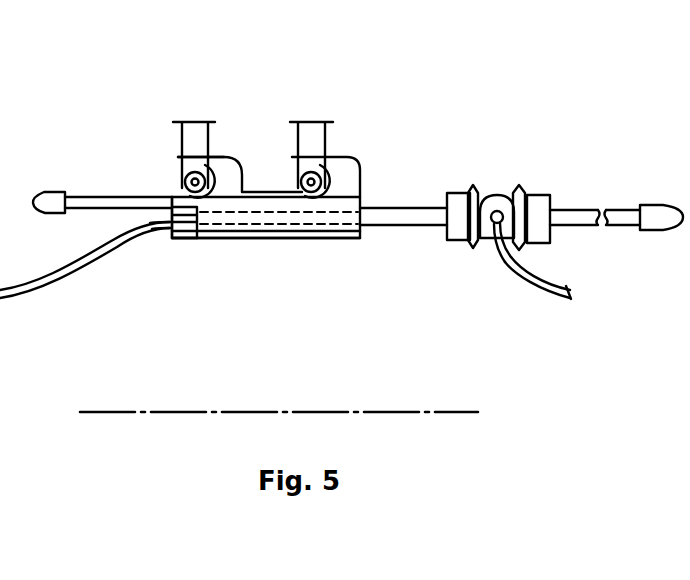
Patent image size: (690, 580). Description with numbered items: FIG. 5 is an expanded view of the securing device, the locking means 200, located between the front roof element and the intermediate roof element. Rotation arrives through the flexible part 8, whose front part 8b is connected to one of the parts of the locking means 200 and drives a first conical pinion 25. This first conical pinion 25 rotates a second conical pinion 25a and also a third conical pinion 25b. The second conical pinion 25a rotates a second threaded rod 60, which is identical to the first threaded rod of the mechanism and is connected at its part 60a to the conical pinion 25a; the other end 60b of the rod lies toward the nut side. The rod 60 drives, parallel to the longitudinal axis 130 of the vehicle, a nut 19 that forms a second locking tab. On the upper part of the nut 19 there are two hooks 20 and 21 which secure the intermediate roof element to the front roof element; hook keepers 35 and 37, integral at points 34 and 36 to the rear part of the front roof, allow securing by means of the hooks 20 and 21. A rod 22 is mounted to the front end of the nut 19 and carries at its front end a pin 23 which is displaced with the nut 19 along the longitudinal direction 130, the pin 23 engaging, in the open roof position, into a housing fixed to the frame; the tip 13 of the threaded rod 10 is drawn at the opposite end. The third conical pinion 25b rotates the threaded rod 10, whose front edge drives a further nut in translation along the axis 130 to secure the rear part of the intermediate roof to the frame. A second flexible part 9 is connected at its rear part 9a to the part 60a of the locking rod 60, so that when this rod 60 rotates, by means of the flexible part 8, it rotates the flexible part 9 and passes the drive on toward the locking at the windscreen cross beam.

The locking means 200 is at (238, 312).
The flexible part 8 is at (538, 296).
The front part of the flexible part 8b is at (470, 242).
The second flexible part 9 is at (42, 294).
The rear part of the second flexible part 9a is at (165, 226).
The threaded rod 10 is at (572, 209).
The rod tip 13 is at (652, 210).
The nut 19 is at (165, 240).
The hook 20 is at (183, 163).
The hook 21 is at (340, 157).
The rod 22 is at (80, 197).
The pin 23 is at (43, 212).
The first conical pinion 25 is at (497, 195).
The second conical pinion 25a is at (458, 241).
The third conical pinion 25b is at (550, 233).
The point 34 is at (312, 130).
The hook keeper 35 is at (300, 178).
The point 36 is at (195, 130).
The hook keeper 37 is at (181, 178).
The second threaded rod 60 is at (374, 235).
The rear part of the rod 60a is at (432, 228).
The housing end 60b is at (186, 238).
The longitudinal axis 130 is at (420, 412).